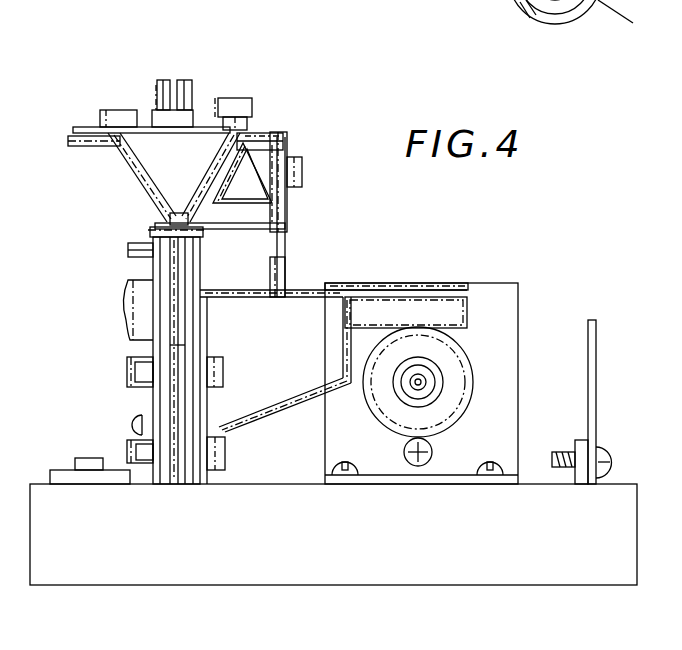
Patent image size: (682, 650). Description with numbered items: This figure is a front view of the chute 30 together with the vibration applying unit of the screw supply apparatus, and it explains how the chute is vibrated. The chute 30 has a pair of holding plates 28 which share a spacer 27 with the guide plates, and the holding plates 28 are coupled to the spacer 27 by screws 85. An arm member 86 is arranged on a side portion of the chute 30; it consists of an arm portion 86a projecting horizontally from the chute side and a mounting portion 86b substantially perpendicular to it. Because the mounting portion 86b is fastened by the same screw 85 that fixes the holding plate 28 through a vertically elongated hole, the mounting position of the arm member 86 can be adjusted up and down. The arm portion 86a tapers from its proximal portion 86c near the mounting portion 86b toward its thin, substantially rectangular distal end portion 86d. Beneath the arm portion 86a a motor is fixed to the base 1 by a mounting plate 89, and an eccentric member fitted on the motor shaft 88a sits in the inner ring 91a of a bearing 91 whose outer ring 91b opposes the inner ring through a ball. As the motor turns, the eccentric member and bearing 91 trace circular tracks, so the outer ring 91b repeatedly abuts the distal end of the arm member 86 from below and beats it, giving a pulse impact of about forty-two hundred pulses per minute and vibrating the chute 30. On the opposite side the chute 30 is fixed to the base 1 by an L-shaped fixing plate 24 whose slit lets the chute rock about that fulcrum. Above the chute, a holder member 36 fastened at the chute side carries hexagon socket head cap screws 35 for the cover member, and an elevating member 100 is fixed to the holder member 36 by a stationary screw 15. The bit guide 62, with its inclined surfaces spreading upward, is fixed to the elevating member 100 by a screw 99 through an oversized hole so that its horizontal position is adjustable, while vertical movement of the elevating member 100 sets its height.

The base 1 is at (372, 565).
The stationary screw 15 is at (302, 172).
The fixing plate 24 is at (65, 470).
The spacer 27 is at (175, 462).
The holding plates 28 is at (188, 477).
The chute 30 is at (157, 80).
The hexagon socket head cap screws 35 is at (235, 98).
The holder member 36 is at (287, 143).
The bit guide 62 is at (157, 165).
The screws 85 is at (222, 440).
The arm member 86 is at (305, 288).
The arm portion 86a is at (335, 300).
The mounting portion 86b is at (210, 465).
The proximal portion 86c is at (278, 400).
The distal end portion 86d is at (435, 300).
The motor shaft 88a is at (420, 382).
The mounting plate 89 is at (505, 414).
The bearing 91 is at (445, 437).
The inner ring 91a is at (405, 400).
The outer ring 91b is at (430, 362).
The screw 99 is at (101, 112).
The elevating member 100 is at (260, 135).